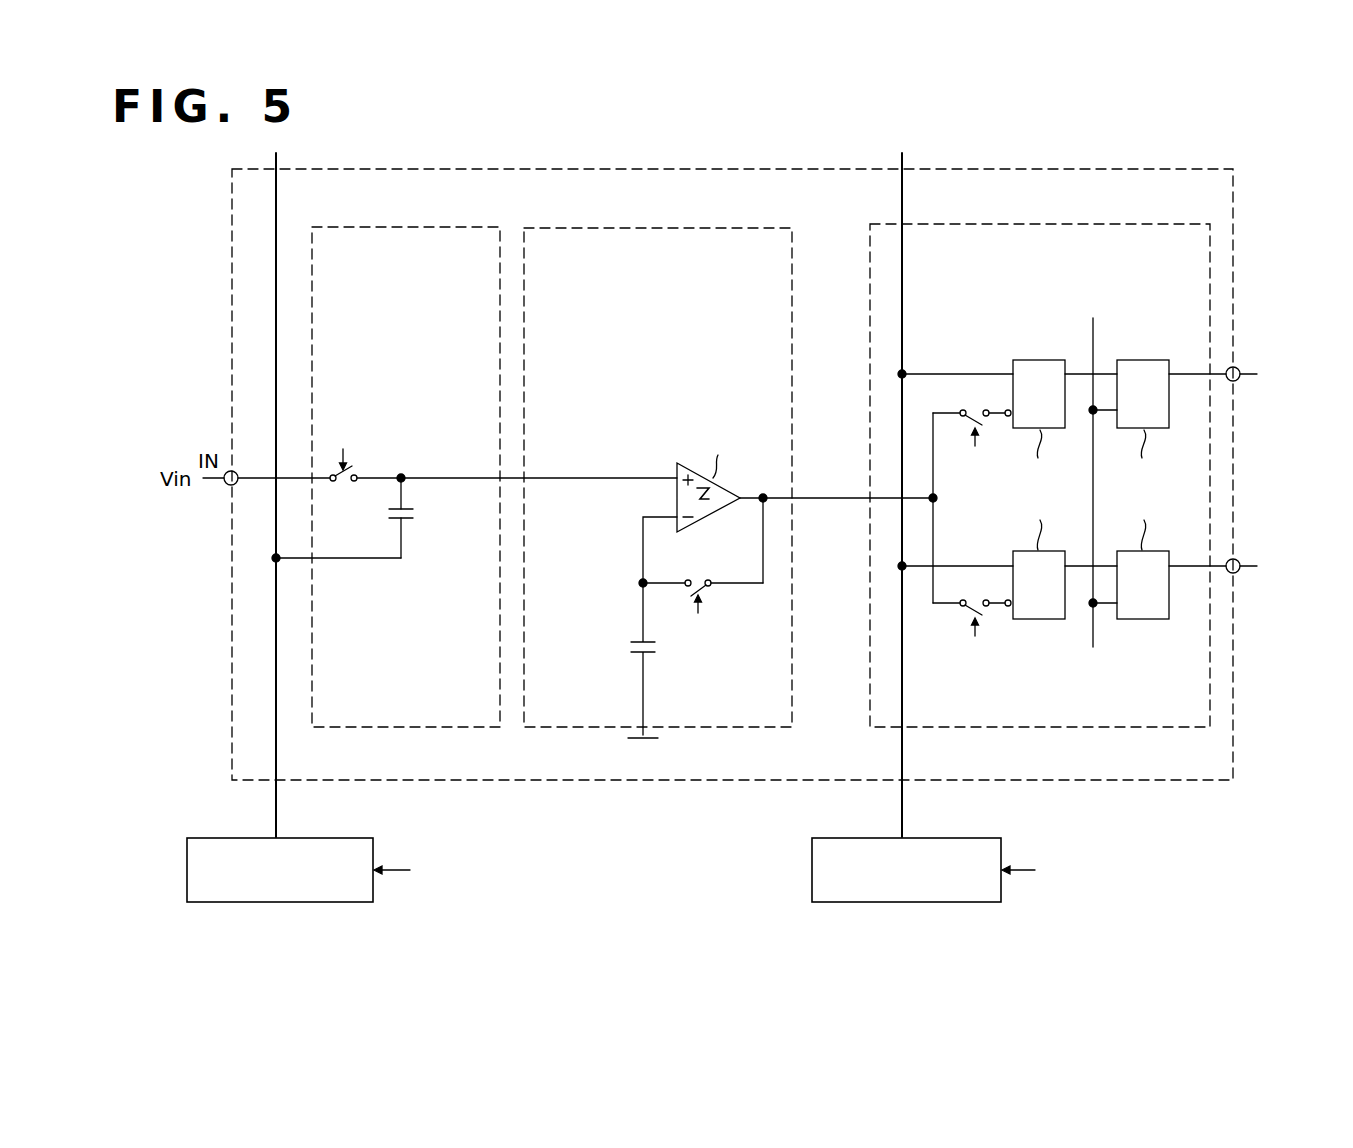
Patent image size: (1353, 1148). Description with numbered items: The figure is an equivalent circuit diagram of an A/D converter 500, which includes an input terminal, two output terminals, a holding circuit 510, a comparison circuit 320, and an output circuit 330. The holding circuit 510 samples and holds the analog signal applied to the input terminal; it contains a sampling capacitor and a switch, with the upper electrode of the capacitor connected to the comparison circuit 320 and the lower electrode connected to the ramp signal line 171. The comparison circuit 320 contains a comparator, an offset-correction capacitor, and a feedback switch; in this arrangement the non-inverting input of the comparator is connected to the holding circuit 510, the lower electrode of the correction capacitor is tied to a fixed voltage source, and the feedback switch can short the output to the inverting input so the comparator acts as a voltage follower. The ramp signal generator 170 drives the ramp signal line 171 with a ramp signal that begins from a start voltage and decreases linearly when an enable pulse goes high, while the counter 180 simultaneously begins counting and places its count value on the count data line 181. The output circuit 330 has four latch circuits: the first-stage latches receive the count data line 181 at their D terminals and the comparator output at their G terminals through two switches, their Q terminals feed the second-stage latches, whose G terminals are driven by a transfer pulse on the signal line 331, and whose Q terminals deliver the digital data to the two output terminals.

The A/D converter 500 is at (598, 168).
The holding circuit 510 is at (447, 216).
The comparison circuit 320 is at (746, 216).
The output circuit 330 is at (1160, 215).
The signal line 331 is at (1095, 331).
The ramp signal generator 170 is at (187, 855).
The ramp signal line 171 is at (268, 807).
The counter 180 is at (812, 855).
The count data line 181 is at (898, 807).